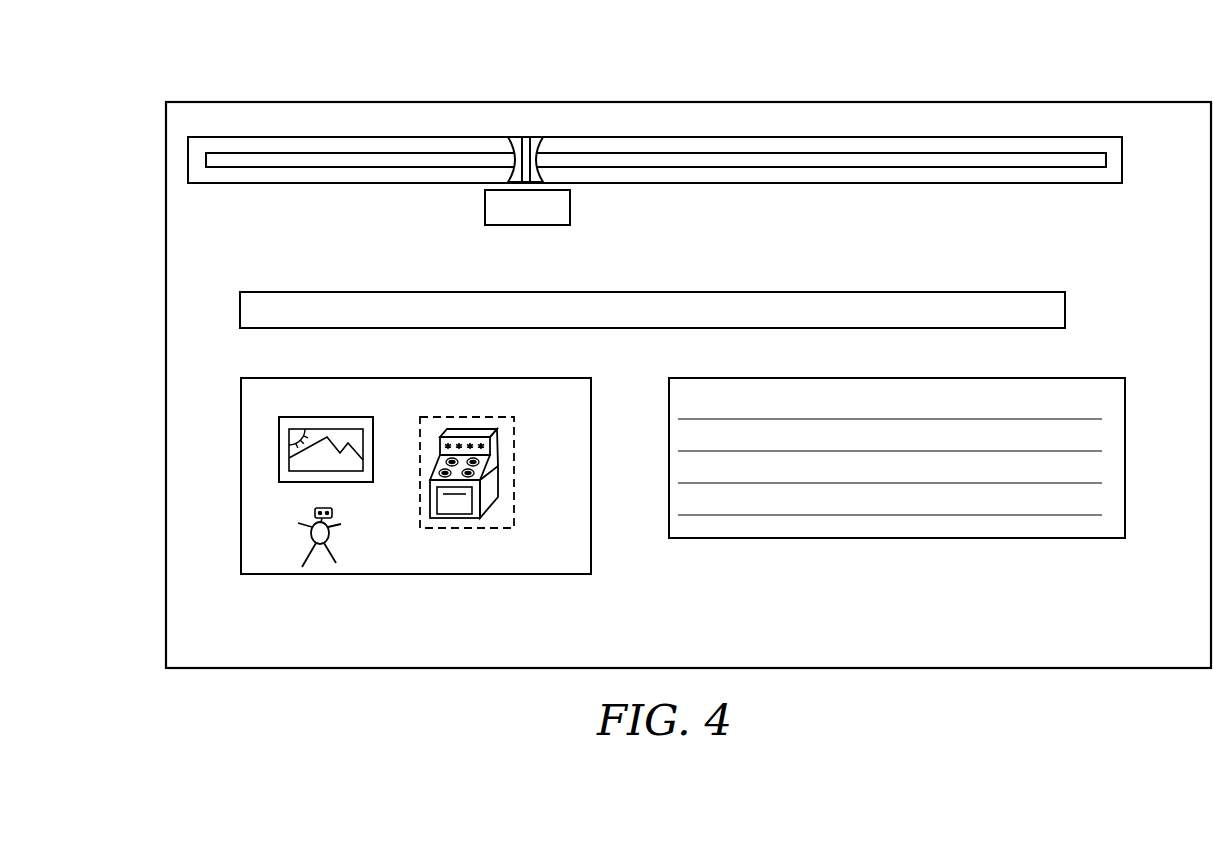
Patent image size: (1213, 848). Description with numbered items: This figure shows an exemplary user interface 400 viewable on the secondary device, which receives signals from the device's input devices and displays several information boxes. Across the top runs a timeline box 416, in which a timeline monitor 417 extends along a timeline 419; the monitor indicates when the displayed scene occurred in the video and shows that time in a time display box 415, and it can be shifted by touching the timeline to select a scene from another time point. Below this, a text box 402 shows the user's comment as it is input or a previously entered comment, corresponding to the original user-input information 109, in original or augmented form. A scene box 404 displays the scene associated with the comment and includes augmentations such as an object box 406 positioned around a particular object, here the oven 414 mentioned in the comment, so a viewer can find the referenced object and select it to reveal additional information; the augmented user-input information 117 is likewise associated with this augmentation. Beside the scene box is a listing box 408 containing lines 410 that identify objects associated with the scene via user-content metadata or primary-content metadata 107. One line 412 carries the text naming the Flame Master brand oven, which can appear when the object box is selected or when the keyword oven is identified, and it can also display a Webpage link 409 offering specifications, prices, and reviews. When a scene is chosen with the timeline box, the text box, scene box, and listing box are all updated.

The user interface 400 is at (278, 94).
The timeline box 416 is at (733, 137).
The timeline 419 is at (813, 167).
The timeline monitor 417 is at (537, 137).
The time display box 415 is at (485, 207).
The text box 402 is at (240, 312).
The original user-input information 109 is at (274, 299).
The scene box 404 is at (257, 378).
The primary-content metadata 107 is at (313, 417).
The object box 406 is at (420, 507).
The augmented user-input information 117 is at (515, 488).
The oven 414 is at (490, 478).
The listing box 408 is at (1108, 378).
The lines 410 is at (1005, 408).
The line 412 is at (1053, 421).
The Webpage link 409 is at (1092, 500).